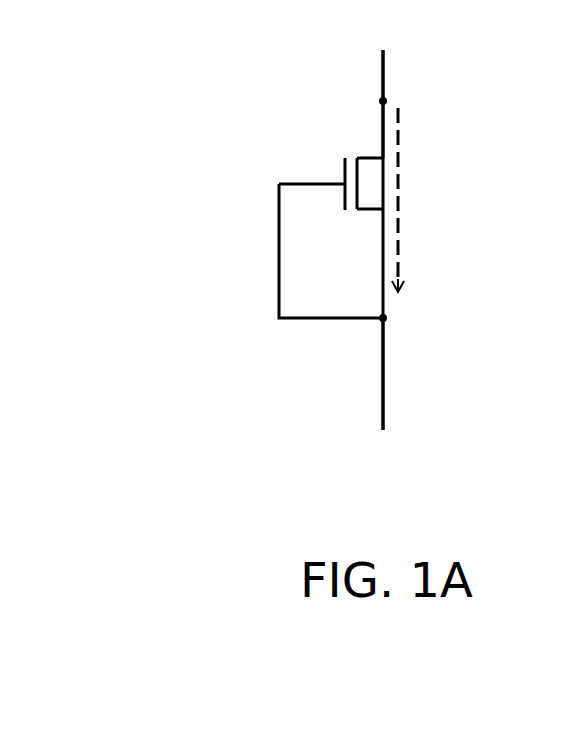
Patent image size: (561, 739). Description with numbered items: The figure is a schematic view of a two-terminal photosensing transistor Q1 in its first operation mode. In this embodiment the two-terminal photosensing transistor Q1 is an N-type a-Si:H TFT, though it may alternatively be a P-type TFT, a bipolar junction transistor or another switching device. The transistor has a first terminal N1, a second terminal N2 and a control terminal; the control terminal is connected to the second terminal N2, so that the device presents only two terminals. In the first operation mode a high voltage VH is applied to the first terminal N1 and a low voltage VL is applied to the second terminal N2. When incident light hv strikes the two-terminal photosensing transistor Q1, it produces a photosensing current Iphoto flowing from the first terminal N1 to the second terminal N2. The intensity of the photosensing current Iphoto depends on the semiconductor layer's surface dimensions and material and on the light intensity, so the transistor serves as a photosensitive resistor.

The first terminal N1 is at (383, 101).
The second terminal N2 is at (383, 318).
The two-terminal photosensing transistor Q1 is at (370, 210).
The photosensing current Iphoto is at (398, 200).